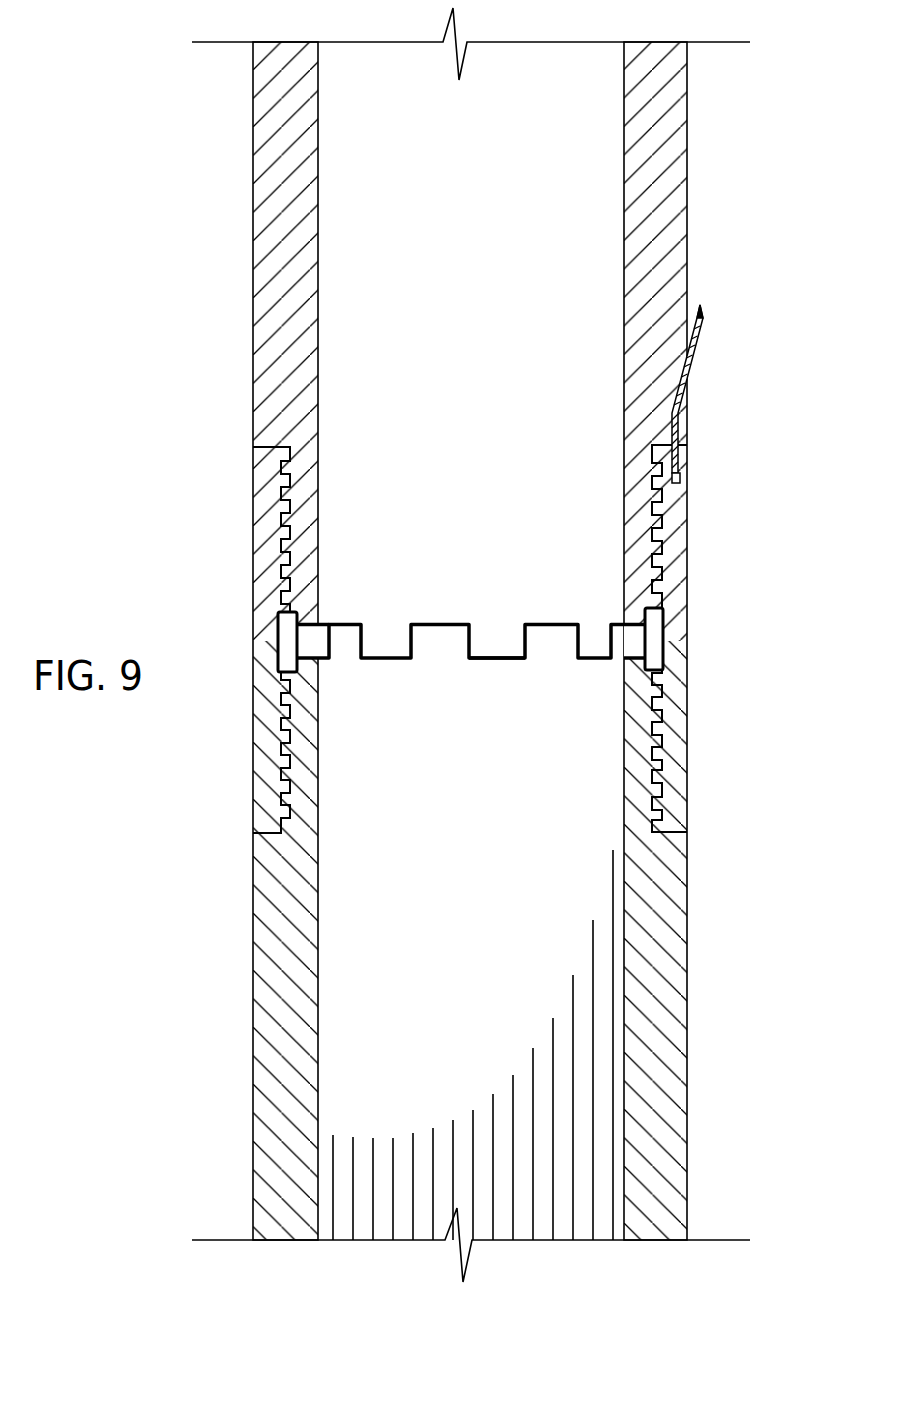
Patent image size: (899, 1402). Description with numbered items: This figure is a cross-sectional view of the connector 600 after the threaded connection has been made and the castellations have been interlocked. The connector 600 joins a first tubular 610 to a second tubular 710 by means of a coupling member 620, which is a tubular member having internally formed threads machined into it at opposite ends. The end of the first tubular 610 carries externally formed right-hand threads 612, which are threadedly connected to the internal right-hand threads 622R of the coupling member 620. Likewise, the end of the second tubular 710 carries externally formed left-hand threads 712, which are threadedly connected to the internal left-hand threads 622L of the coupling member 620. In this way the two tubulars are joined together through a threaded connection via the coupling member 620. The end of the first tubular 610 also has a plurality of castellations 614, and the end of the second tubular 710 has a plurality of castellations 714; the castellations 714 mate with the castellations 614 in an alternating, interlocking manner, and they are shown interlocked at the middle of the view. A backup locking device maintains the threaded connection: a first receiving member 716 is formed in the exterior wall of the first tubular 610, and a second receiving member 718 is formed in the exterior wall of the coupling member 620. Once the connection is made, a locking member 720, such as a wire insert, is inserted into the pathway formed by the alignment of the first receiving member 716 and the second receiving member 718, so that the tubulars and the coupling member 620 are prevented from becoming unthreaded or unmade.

The connector 600 is at (200, 262).
The first tubular 610 is at (688, 164).
The right-hand threads 612 is at (652, 472).
The castellations 614 is at (502, 650).
The coupling member 620 is at (667, 638).
The right-hand threads 622R is at (673, 519).
The left-hand threads 622L is at (673, 730).
The second tubular 710 is at (688, 1065).
The left-hand threads 712 is at (655, 772).
The castellations 714 is at (443, 631).
The first receiving member 716 is at (683, 416).
The second receiving member 718 is at (681, 483).
The locking member 720 is at (700, 306).